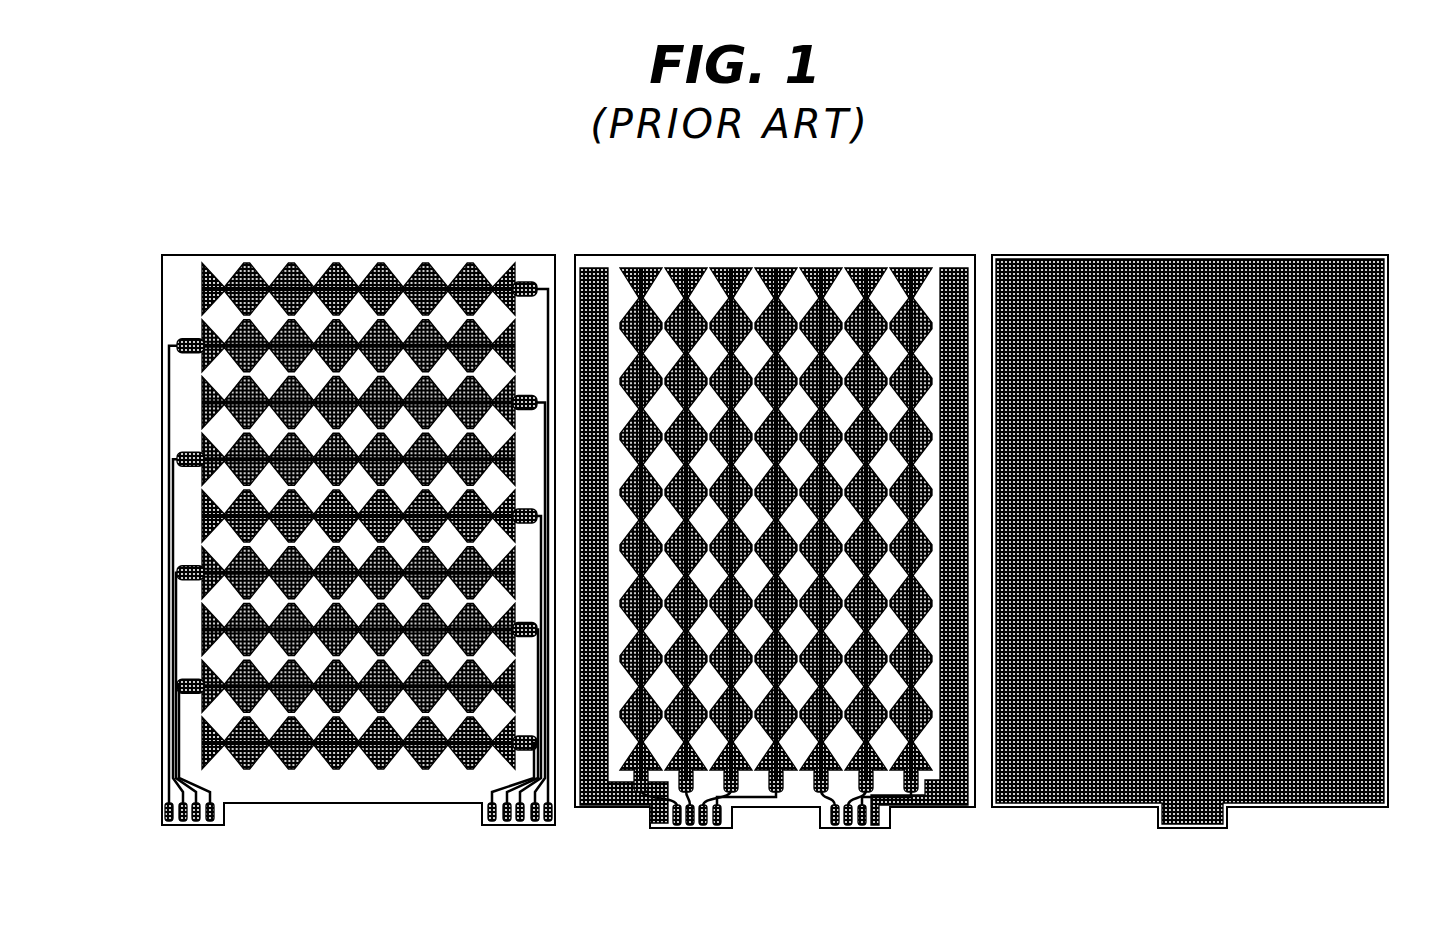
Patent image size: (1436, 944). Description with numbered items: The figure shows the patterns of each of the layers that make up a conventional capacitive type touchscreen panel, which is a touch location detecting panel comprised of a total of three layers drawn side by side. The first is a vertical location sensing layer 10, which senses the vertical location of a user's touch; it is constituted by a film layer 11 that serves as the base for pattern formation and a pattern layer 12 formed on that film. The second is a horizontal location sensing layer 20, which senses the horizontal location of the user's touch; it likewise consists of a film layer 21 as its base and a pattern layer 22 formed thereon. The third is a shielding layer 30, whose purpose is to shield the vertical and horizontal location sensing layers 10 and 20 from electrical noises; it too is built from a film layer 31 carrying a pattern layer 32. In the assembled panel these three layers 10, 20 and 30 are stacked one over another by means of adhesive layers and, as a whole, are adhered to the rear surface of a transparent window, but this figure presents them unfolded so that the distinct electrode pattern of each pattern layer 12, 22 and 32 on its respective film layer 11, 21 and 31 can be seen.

The vertical location sensing layer 10 is at (335, 877).
The film layer 11 is at (447, 256).
The pattern layer 12 is at (292, 262).
The horizontal location sensing layer 20 is at (751, 877).
The film layer 21 is at (875, 256).
The pattern layer 22 is at (731, 268).
The shielding layer 30 is at (1176, 877).
The film layer 31 is at (1275, 256).
The pattern layer 32 is at (1135, 256).